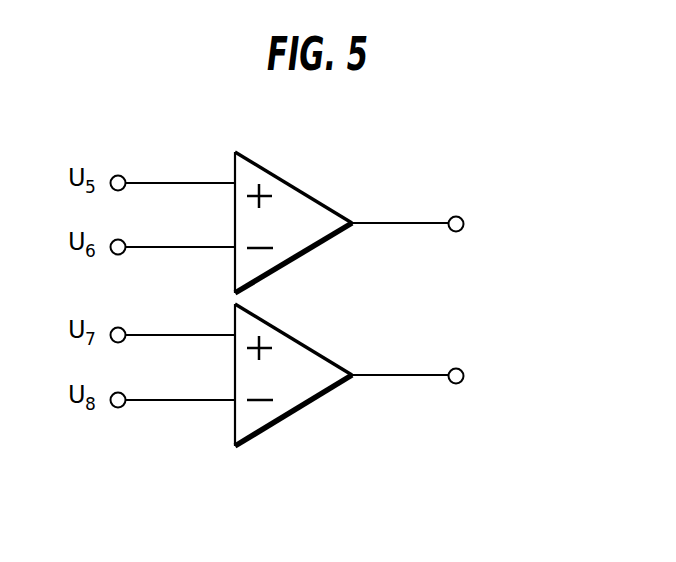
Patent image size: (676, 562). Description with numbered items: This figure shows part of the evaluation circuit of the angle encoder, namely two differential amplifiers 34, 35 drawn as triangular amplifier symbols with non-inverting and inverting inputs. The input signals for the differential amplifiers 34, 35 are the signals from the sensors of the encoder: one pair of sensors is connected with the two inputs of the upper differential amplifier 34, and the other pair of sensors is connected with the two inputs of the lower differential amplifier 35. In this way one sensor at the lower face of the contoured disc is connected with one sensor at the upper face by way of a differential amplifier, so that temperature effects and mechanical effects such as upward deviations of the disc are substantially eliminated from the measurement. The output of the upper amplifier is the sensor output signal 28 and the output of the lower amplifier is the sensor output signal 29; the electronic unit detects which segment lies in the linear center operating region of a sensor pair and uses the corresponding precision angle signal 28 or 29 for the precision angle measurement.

The differential amplifier 34 is at (298, 217).
The differential amplifier 35 is at (298, 369).
The precision angle signal 28 is at (429, 225).
The precision angle signal 29 is at (429, 378).